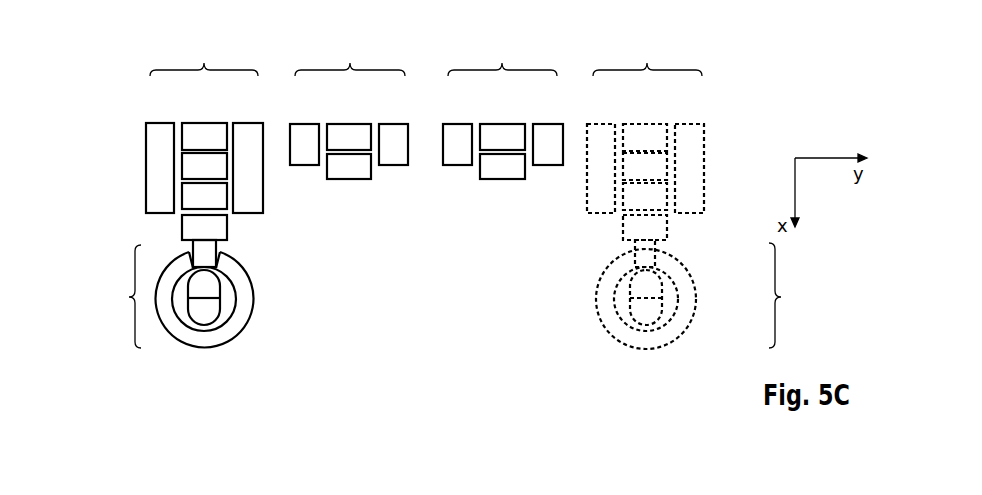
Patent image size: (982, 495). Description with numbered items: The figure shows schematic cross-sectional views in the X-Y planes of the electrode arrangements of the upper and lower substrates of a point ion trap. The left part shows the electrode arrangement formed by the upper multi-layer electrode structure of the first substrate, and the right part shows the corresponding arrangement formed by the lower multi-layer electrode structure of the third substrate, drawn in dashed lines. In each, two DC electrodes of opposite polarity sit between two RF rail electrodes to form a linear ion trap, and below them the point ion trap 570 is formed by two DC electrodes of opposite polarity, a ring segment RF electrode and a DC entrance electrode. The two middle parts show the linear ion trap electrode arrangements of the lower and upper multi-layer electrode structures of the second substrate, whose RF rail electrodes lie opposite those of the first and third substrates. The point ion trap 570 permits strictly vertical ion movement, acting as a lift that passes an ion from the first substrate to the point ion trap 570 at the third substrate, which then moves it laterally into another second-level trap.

The point ion trap 570 is at (453, 303).